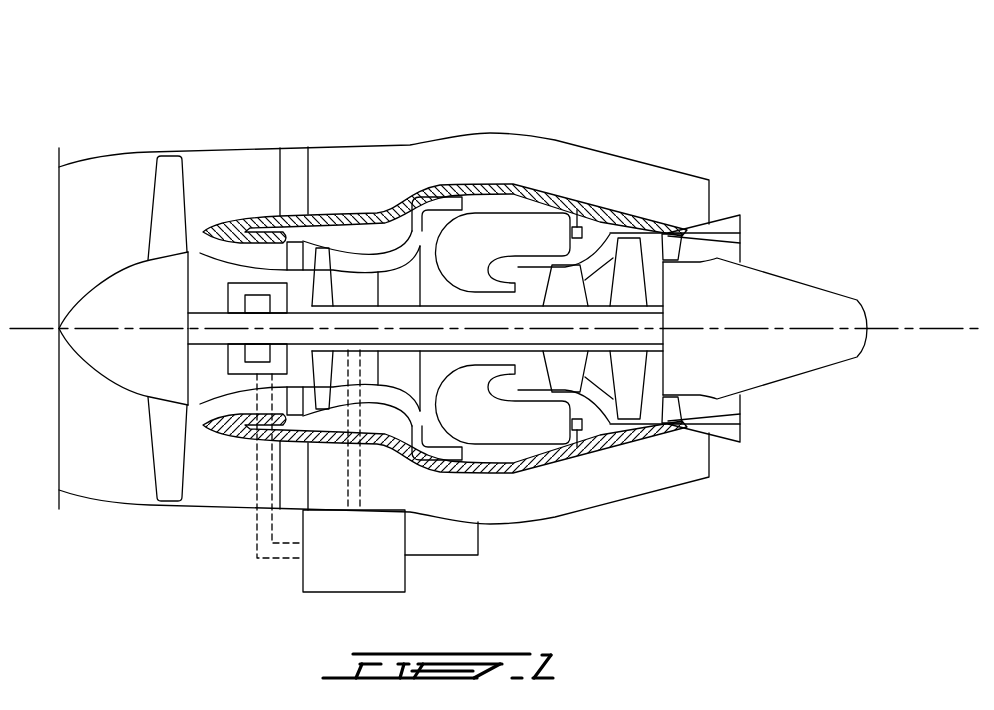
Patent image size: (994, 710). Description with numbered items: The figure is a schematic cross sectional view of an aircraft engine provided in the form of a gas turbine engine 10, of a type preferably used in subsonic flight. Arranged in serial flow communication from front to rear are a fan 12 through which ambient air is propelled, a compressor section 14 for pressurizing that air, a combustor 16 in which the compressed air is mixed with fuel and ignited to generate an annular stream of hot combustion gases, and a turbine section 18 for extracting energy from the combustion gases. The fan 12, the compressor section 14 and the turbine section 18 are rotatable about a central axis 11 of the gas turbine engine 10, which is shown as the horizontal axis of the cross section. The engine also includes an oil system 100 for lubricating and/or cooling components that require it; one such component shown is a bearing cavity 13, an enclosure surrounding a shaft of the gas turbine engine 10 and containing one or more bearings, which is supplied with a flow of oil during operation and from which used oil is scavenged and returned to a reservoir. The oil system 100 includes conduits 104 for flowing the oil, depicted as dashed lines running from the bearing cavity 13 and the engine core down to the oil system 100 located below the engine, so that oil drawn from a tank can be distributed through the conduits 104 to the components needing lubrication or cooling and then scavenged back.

The gas turbine engine 10 is at (630, 109).
The central axis 11 is at (897, 328).
The fan 12 is at (165, 437).
The bearing cavity 13 is at (237, 366).
The compressor section 14 is at (364, 265).
The combustor 16 is at (503, 228).
The turbine section 18 is at (591, 378).
The oil system 100 is at (277, 569).
The conduits 104 is at (257, 522).